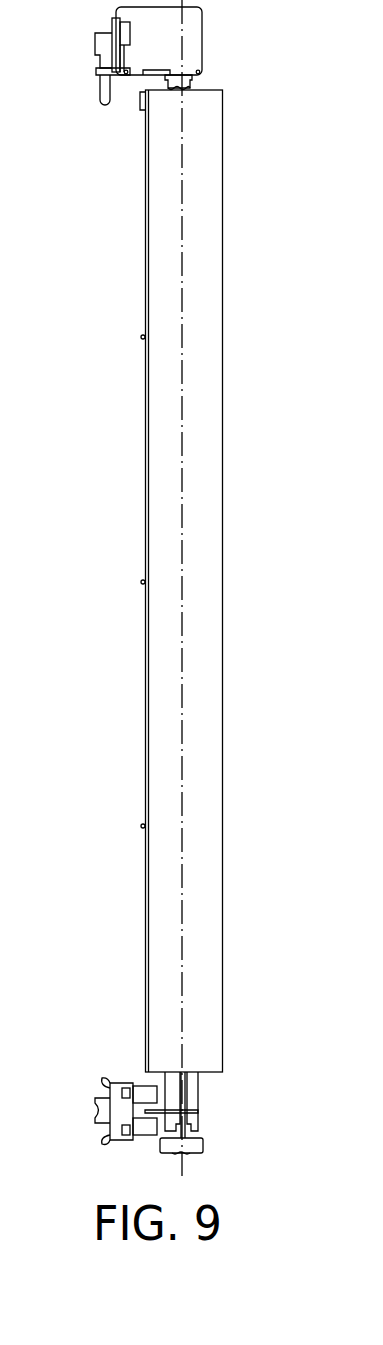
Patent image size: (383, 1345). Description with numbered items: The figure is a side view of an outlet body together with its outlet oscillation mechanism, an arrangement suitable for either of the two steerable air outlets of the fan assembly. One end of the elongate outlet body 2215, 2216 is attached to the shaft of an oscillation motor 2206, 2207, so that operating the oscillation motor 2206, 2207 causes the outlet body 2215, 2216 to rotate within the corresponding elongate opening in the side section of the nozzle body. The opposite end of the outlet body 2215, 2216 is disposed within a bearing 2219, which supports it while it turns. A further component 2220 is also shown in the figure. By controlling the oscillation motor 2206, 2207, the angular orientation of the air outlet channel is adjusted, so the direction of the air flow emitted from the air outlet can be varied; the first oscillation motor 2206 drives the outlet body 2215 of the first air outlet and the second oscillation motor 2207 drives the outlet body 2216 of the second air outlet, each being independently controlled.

The first oscillation motor 2206 is at (198, 56).
The second oscillation motor 2207 is at (195, 45).
The outlet body 2215 is at (137, 581).
The outlet body 2216 is at (157, 417).
The bearing 2219 is at (199, 1117).
The idler end foot 2220 is at (202, 1142).